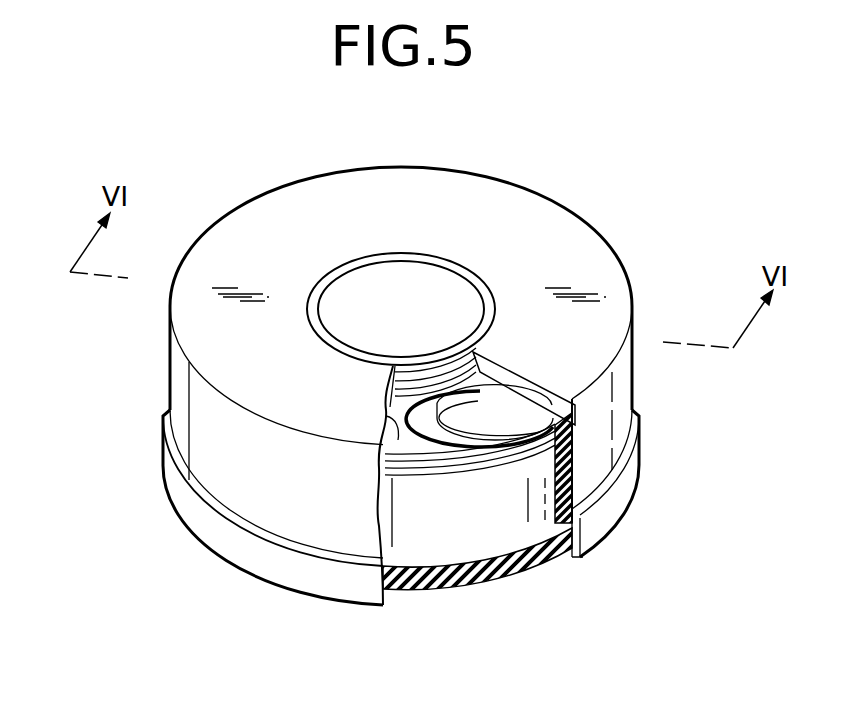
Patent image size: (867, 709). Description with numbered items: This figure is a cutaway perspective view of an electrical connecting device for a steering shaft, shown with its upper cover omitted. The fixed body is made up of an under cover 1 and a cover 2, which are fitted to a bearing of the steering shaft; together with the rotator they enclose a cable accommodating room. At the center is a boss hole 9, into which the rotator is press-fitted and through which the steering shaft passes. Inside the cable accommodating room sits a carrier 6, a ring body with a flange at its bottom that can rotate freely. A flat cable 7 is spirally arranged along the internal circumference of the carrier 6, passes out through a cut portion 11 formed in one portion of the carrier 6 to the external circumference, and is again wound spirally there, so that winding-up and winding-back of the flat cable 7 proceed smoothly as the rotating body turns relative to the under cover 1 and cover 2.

The under cover 1 is at (238, 548).
The cover 2 is at (177, 308).
The carrier 6 is at (506, 403).
The flat cable 7 is at (488, 528).
The boss hole 9 is at (449, 284).
The cut portion 11 is at (424, 438).